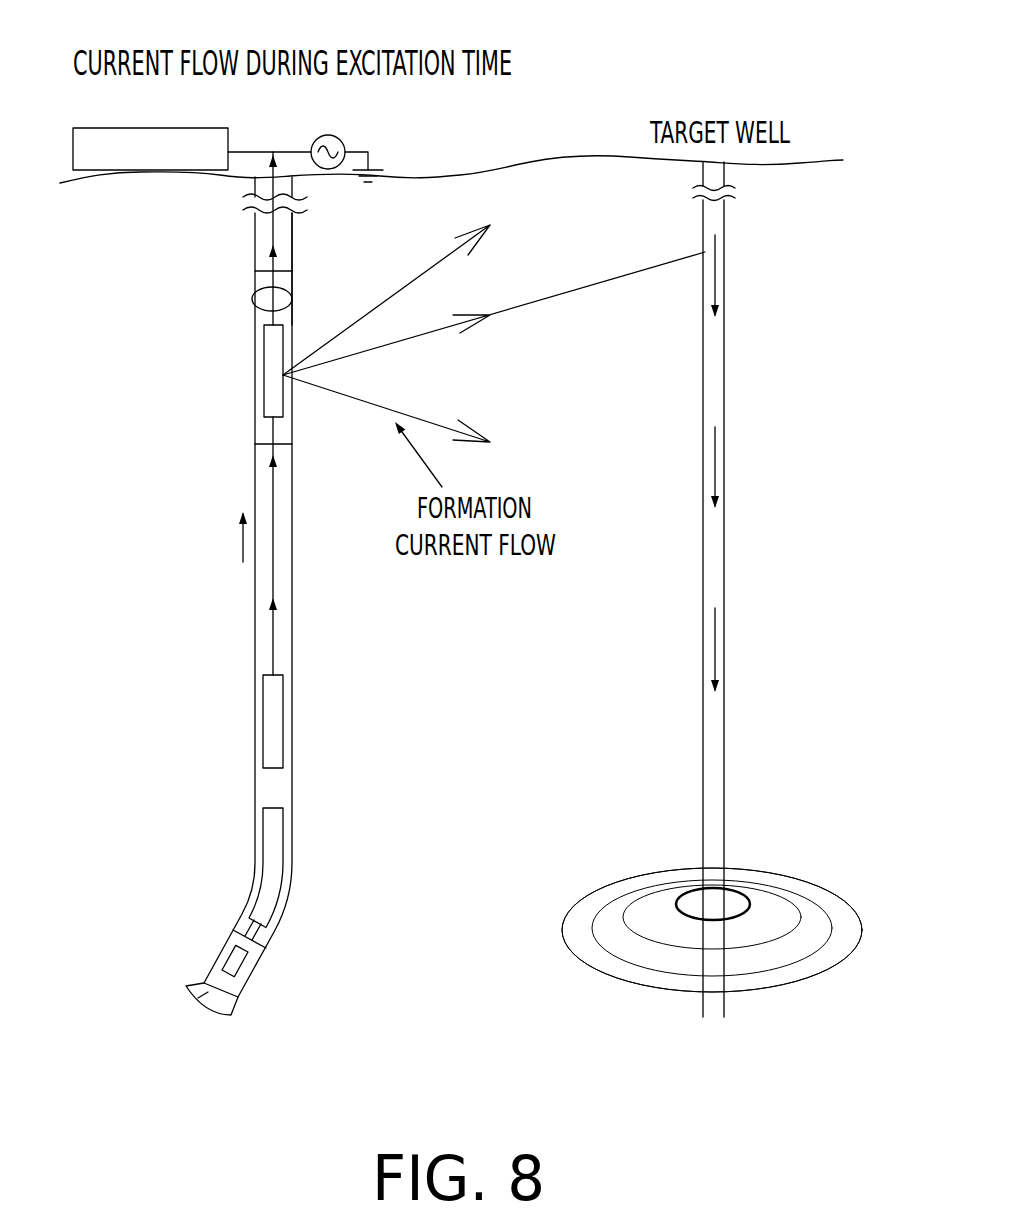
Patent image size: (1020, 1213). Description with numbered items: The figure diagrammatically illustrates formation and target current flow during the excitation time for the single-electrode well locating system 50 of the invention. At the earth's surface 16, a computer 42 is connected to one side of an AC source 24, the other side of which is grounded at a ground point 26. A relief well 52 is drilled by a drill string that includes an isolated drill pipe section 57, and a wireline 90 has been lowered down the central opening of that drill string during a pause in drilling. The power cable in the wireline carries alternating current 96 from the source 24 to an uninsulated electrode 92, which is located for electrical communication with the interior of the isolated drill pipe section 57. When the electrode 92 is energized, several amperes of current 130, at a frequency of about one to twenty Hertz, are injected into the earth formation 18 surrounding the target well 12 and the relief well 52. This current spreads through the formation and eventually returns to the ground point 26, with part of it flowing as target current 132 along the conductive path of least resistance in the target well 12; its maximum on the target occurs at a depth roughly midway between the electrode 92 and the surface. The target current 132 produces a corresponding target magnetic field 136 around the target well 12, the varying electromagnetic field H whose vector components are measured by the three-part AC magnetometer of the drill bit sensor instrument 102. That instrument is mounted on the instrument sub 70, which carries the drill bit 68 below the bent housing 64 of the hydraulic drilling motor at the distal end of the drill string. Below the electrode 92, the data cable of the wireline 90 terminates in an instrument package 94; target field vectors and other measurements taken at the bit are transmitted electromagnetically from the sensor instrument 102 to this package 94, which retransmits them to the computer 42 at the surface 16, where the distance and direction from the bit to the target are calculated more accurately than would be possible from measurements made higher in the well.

The computer 42 is at (102, 128).
The AC source 24 is at (340, 135).
The ground point 26 is at (378, 164).
The earth's surface 16 is at (500, 172).
The improved well locating system 50 is at (183, 476).
The relief well 52 is at (293, 227).
The isolated drill pipe section 57 is at (293, 293).
The wireline 90 is at (257, 295).
The electrode 92 is at (263, 394).
The injected current 130 is at (505, 307).
The earth formation 18 is at (561, 411).
The alternating current 96 is at (243, 540).
The instrument package 94 is at (270, 730).
The bent housing 64 is at (273, 842).
The instrument sub 70 is at (222, 955).
The drill bit sensor instrument 102 is at (237, 960).
The drill bit 68 is at (197, 1002).
The target well 12 is at (725, 330).
The target current 132 is at (715, 462).
The target magnetic field 136 is at (772, 949).
The electromagnetic field H is at (830, 892).